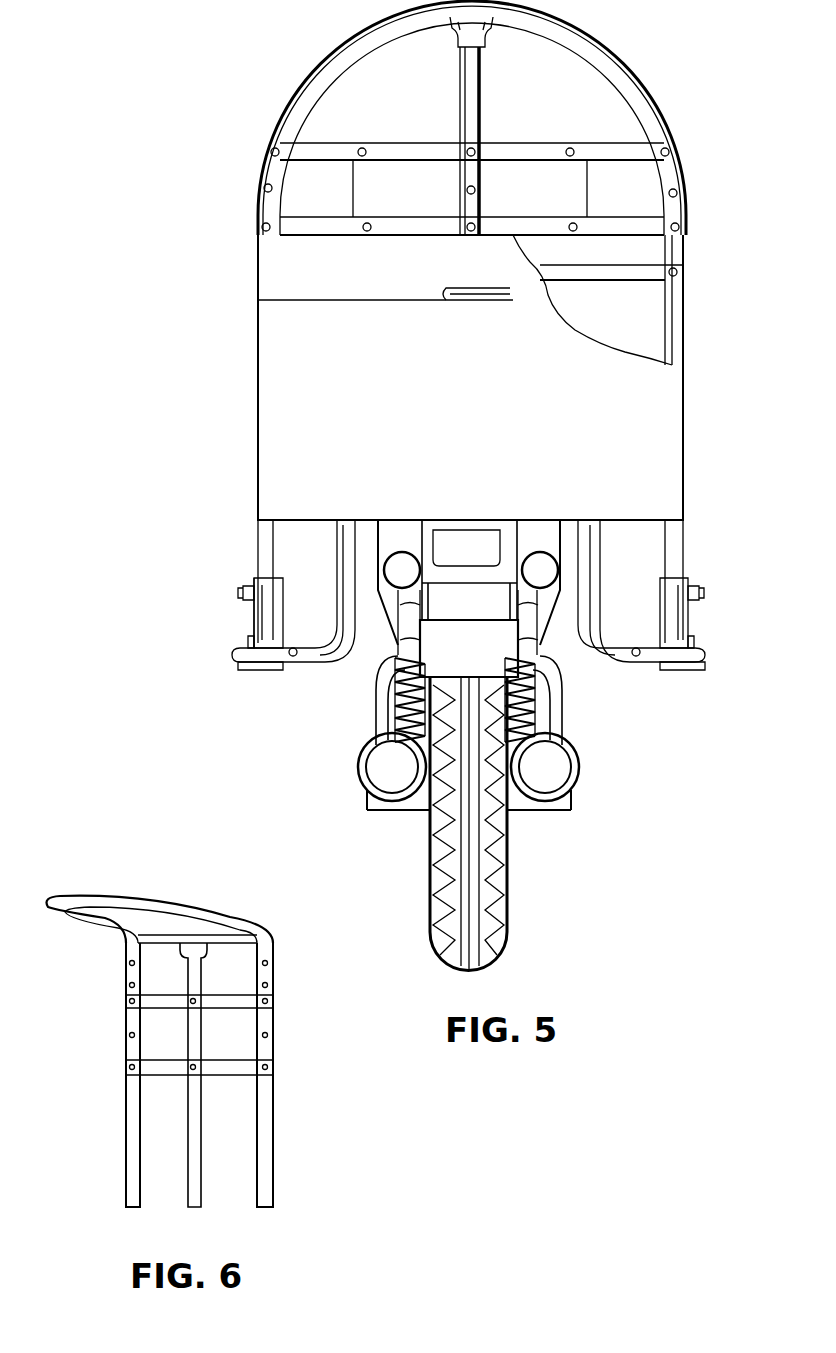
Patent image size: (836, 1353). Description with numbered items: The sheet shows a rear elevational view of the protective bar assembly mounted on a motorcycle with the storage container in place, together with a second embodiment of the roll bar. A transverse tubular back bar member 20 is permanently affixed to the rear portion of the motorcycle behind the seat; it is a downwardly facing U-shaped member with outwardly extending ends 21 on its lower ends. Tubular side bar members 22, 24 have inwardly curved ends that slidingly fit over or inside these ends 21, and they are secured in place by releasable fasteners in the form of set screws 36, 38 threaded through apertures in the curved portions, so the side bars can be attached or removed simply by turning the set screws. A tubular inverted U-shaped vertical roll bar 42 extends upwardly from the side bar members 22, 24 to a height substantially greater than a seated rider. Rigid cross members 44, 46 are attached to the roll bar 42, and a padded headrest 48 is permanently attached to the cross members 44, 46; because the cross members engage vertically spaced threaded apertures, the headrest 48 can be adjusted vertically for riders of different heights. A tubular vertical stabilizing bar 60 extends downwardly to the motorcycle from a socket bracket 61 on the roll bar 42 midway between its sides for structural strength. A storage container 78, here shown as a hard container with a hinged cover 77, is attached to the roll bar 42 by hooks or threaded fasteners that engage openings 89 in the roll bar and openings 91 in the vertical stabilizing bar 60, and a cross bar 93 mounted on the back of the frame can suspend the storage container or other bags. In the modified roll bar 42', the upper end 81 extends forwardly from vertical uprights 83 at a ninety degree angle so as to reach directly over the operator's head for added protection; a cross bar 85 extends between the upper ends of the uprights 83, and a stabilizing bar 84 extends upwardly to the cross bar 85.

In FIG. 5, the back bar member 20 is at (350, 553).
In FIG. 5, the outwardly extending ends 21 is at (333, 662).
In FIG. 5, the side bar member 22 is at (232, 656).
In FIG. 5, the side bar member 24 is at (705, 653).
In FIG. 5, the set screw 36 is at (293, 661).
In FIG. 5, the set screw 38 is at (636, 661).
In FIG. 5, the roll bar 42 is at (473, 118).
In FIG. 6, the modified roll bar 42' is at (330, 982).
In FIG. 5, the cross member 44 is at (527, 152).
In FIG. 5, the cross member 46 is at (305, 226).
In FIG. 5, the padded headrest 48 is at (560, 192).
In FIG. 5, the vertical stabilizing bar 60 is at (459, 88).
In FIG. 5, the socket bracket 61 is at (461, 34).
In FIG. 5, the hinged cover 77 is at (262, 259).
In FIG. 5, the storage container 78 is at (275, 396).
In FIG. 6, the upper end 81 is at (130, 897).
In FIG. 6, the vertical uprights 83 is at (130, 1140).
In FIG. 6, the stabilizing bar 84 is at (195, 1107).
In FIG. 6, the cross bar 85 is at (218, 934).
In FIG. 5, the openings 89 is at (684, 186).
In FIG. 5, the openings 91 is at (480, 141).
In FIG. 5, the cross bar 93 is at (618, 272).